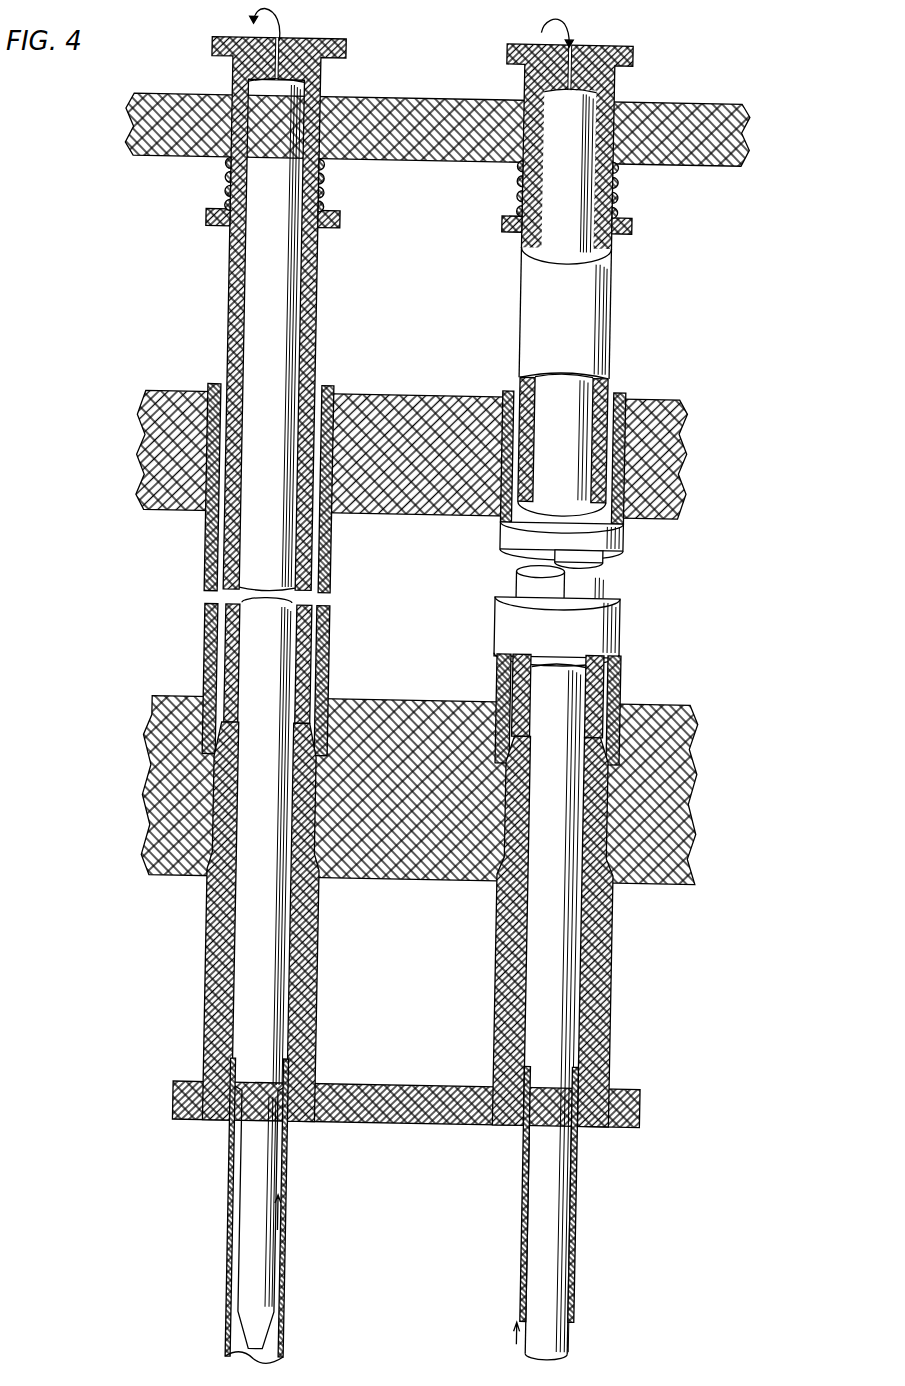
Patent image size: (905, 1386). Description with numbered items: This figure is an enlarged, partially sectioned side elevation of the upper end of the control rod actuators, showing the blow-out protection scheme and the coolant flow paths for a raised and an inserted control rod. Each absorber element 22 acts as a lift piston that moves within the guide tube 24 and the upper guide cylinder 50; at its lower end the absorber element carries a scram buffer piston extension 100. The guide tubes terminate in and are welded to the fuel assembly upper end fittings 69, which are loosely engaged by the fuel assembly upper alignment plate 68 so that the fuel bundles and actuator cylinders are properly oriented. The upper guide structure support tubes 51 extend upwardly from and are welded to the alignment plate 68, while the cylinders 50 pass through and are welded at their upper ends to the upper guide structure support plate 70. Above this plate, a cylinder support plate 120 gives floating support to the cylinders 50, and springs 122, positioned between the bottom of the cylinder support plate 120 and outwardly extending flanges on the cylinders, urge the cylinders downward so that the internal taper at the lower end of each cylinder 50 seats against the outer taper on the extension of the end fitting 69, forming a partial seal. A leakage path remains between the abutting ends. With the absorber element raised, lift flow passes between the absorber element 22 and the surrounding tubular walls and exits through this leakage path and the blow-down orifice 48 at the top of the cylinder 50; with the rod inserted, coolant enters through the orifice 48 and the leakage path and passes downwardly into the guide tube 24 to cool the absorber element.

The absorber element 22 is at (278, 546).
The guide tube 24 is at (590, 1215).
The blow-down orifice 48 is at (563, 45).
The upper guide cylinder 50 is at (607, 306).
The upper guide structure support tube 51 is at (623, 634).
The fuel assembly upper alignment plate 68 is at (699, 781).
The fuel assembly upper end fitting 69 is at (650, 1104).
The upper guide structure support plate 70 is at (662, 400).
The scram buffer piston extension 100 is at (267, 1256).
The cylinder support plate 120 is at (736, 140).
The springs 122 is at (612, 192).